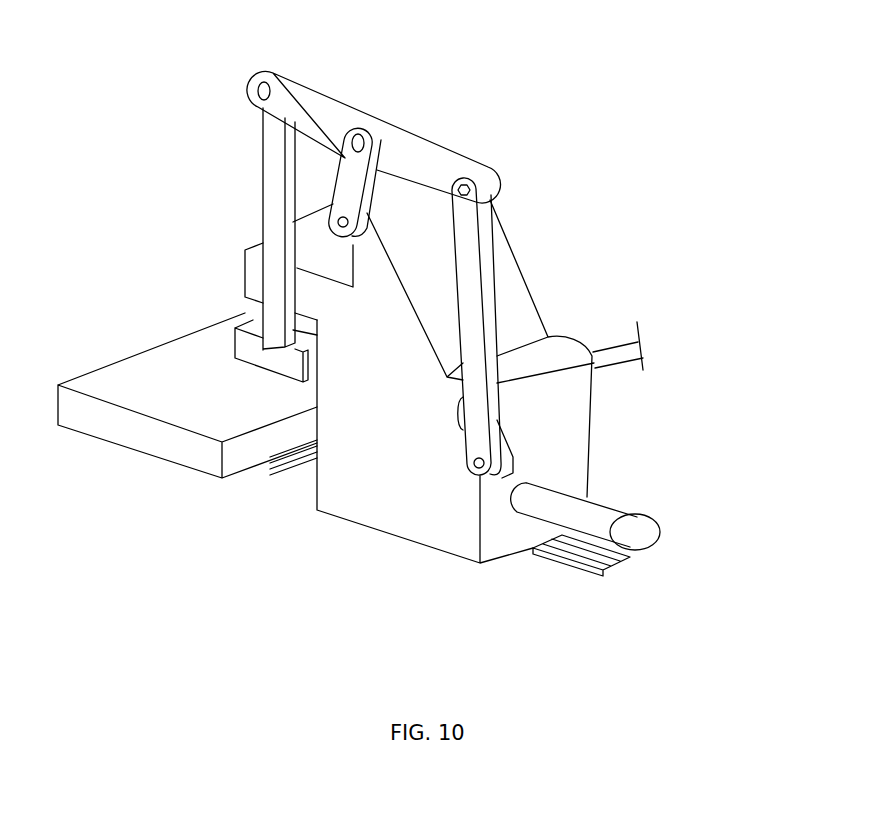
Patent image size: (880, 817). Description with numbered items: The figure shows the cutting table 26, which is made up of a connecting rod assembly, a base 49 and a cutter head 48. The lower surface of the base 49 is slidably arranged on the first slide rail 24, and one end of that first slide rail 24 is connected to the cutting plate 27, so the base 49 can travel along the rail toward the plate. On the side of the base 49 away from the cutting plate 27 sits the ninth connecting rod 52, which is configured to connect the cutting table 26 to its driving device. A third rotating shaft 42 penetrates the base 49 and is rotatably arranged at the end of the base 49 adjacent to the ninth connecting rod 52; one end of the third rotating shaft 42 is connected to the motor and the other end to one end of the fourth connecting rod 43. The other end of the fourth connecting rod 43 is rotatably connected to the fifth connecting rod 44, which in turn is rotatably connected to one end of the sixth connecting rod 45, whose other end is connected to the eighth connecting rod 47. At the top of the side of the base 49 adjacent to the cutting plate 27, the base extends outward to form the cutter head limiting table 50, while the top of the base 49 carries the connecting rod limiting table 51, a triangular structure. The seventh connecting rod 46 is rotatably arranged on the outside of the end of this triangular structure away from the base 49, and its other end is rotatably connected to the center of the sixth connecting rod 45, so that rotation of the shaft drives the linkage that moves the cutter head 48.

The first slide rail 24 is at (567, 555).
The cutting table 26 is at (540, 250).
The cutting plate 27 is at (203, 407).
The third rotating shaft 42 is at (637, 347).
The fourth connecting rod 43 is at (503, 453).
The fifth connecting rod 44 is at (480, 408).
The sixth connecting rod 45 is at (408, 157).
The seventh connecting rod 46 is at (353, 180).
The eighth connecting rod 47 is at (277, 188).
The cutter head 48 is at (250, 347).
The base 49 is at (430, 512).
The cutter head limiting table 50 is at (245, 273).
The connecting rod limiting table 51 is at (367, 262).
The ninth connecting rod 52 is at (627, 528).